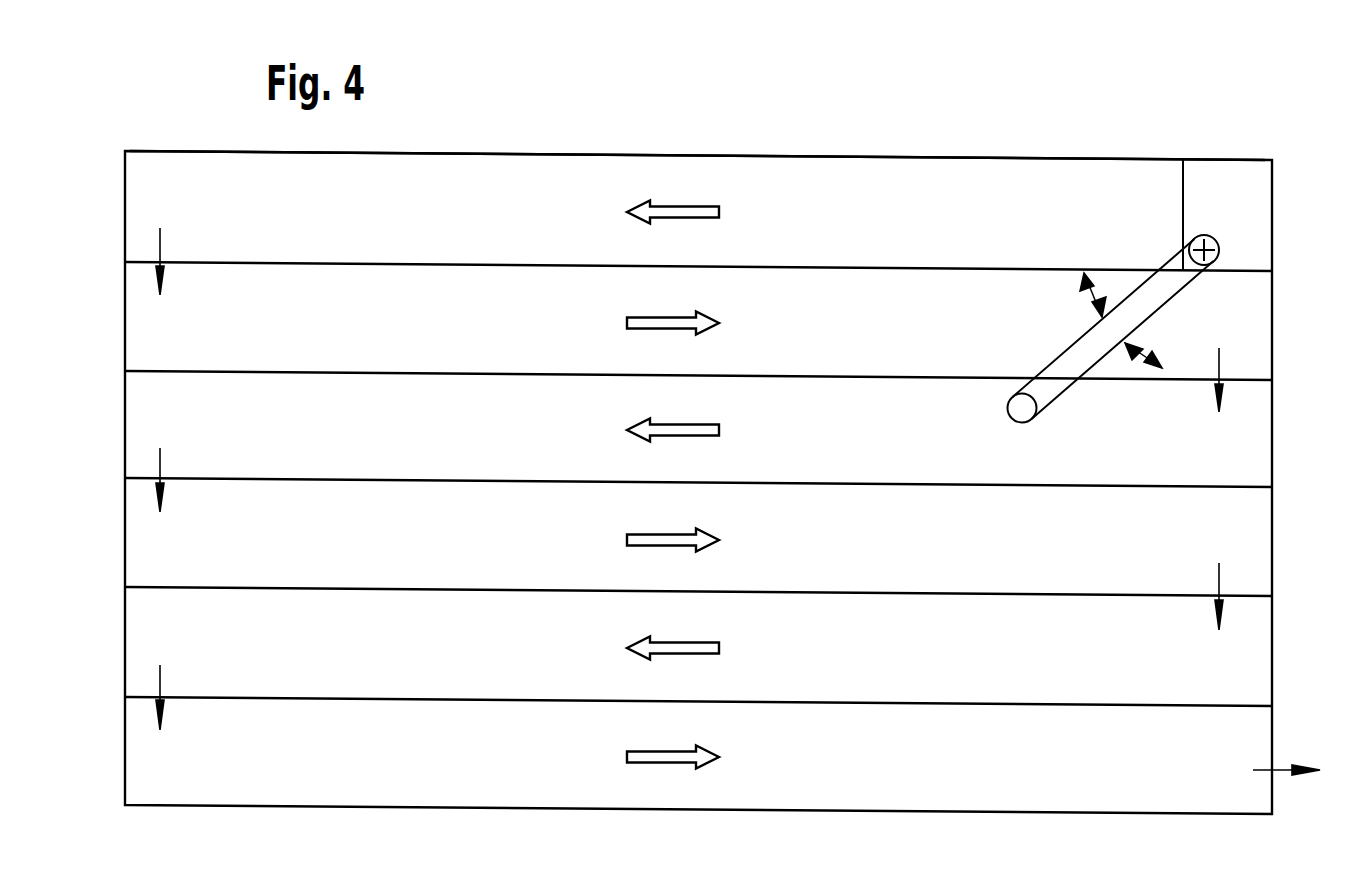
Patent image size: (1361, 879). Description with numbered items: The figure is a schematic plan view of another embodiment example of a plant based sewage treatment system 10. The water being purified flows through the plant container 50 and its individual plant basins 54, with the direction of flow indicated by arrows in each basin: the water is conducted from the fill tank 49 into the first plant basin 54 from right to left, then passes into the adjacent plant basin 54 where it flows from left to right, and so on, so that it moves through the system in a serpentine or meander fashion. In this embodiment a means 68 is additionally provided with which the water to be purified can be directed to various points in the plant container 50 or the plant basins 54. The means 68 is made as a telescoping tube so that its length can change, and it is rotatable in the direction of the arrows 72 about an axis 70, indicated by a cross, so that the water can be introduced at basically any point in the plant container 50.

The plant based sewage treatment system 10 is at (1040, 100).
The plant container 50 is at (733, 155).
The plant basins 54 is at (852, 228).
The fill tank 49 is at (1250, 227).
The axis 70 is at (1219, 258).
The means for directing water 68 is at (1173, 297).
The arrows 72 is at (1088, 296).